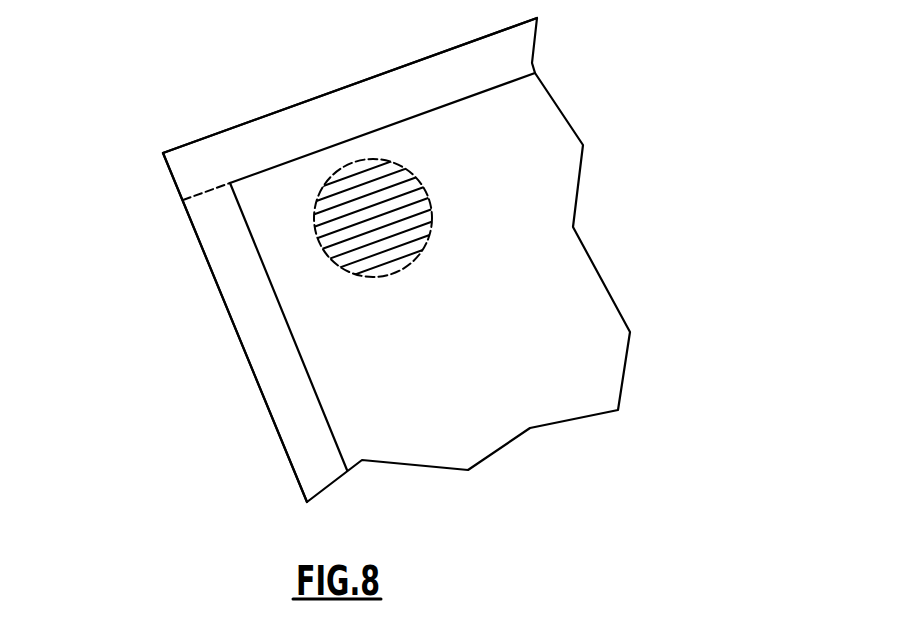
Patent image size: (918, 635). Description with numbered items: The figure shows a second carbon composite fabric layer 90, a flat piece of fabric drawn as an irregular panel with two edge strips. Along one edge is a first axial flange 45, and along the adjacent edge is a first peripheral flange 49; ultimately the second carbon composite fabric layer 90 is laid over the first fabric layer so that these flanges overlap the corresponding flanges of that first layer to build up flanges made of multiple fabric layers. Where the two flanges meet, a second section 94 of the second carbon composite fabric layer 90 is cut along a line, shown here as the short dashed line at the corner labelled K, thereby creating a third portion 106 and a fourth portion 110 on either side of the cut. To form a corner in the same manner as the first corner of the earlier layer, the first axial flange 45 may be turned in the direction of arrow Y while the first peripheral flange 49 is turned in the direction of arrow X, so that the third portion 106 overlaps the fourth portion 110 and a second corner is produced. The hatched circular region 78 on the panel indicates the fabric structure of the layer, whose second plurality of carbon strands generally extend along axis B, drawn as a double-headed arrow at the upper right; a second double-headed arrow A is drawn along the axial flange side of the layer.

The first axial flange 45 is at (268, 362).
The first peripheral flange 49 is at (367, 100).
The hatched aperture / opening 78 is at (358, 245).
The second carbon composite fabric layer 90 is at (508, 272).
The second section 94 is at (150, 149).
The third portion 106 is at (205, 160).
The fourth portion 110 is at (207, 203).
The bend line axis K is at (207, 193).
The arrow X is at (293, 107).
The arrow Y is at (200, 304).
The direction A is at (148, 403).
The axis B is at (590, 51).